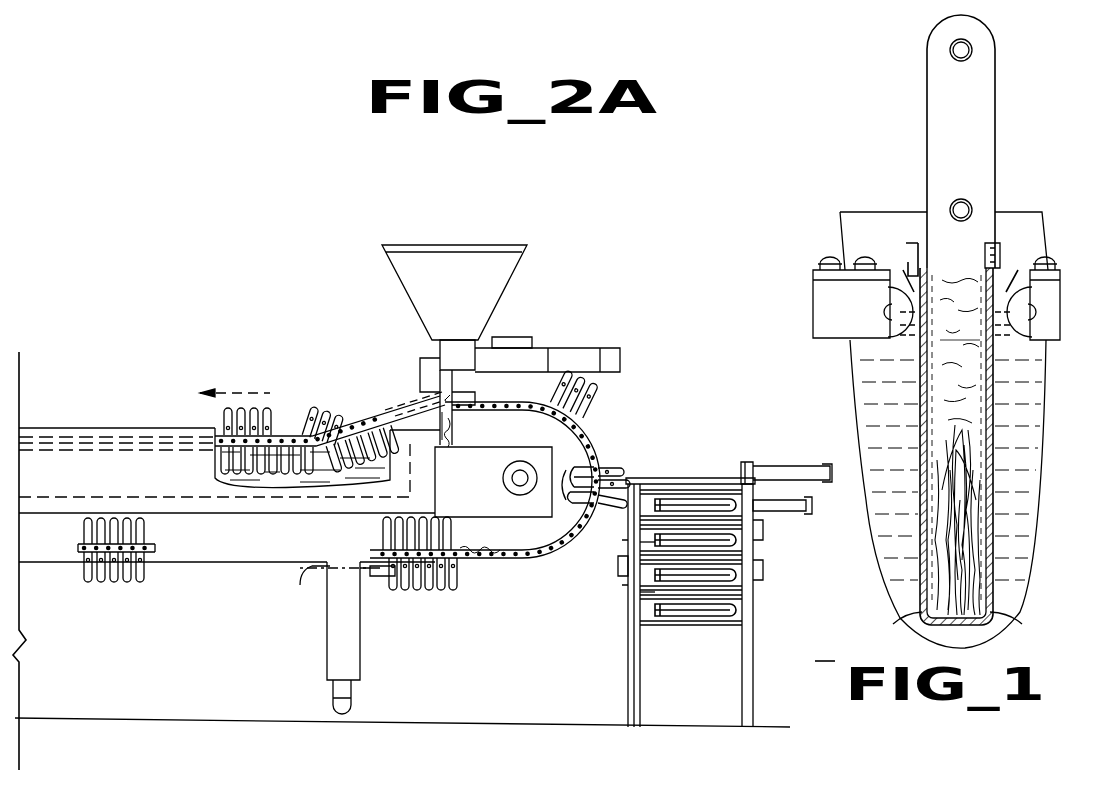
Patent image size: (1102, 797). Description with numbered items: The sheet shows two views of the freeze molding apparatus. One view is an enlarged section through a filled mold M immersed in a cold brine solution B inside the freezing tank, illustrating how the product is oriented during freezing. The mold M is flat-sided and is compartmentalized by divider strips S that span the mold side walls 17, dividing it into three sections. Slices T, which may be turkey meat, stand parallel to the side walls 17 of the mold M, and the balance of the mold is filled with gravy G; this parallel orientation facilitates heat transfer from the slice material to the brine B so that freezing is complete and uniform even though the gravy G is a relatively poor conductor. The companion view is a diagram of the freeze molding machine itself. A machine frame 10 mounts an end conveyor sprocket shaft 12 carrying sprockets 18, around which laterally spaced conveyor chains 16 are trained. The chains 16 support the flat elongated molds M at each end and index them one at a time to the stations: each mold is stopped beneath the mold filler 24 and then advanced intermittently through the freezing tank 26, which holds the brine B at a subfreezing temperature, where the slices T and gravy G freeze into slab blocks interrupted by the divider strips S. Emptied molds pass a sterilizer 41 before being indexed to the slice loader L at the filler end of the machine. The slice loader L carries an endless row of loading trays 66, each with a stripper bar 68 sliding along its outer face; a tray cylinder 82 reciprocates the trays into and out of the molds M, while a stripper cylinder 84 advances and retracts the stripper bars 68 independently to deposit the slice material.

In FIG. 2A, the freezing tank 26 is at (92, 482).
In FIG. 2A, the conveyor chains 16 is at (372, 430).
In FIG. 1, the conveyor chains 16 is at (815, 300).
In FIG. 2A, the mold filler 24 is at (534, 302).
In FIG. 2A, the sprockets 18 is at (500, 443).
In FIG. 2A, the conveyor sprocket shaft 12 is at (517, 480).
In FIG. 2A, the machine frame 10 is at (272, 560).
In FIG. 2A, the sterilizer 41 is at (382, 575).
In FIG. 2A, the slice loader L is at (684, 478).
In FIG. 2A, the tray cylinder 82 is at (830, 446).
In FIG. 2A, the stripper cylinder 84 is at (835, 528).
In FIG. 2A, the stripper bar 68 is at (645, 509).
In FIG. 2A, the loading trays 66 is at (645, 570).
In FIG. 2A, the divider strips S is at (303, 423).
In FIG. 1, the divider strips S is at (930, 125).
In FIG. 2A, the mold M is at (222, 462).
In FIG. 1, the mold M is at (920, 378).
In FIG. 2A, the brine solution B is at (355, 482).
In FIG. 1, the brine solution B is at (886, 410).
In FIG. 1, the gravy G is at (946, 358).
In FIG. 1, the slices T is at (965, 597).
In FIG. 1, the mold side walls 17 is at (1018, 630).